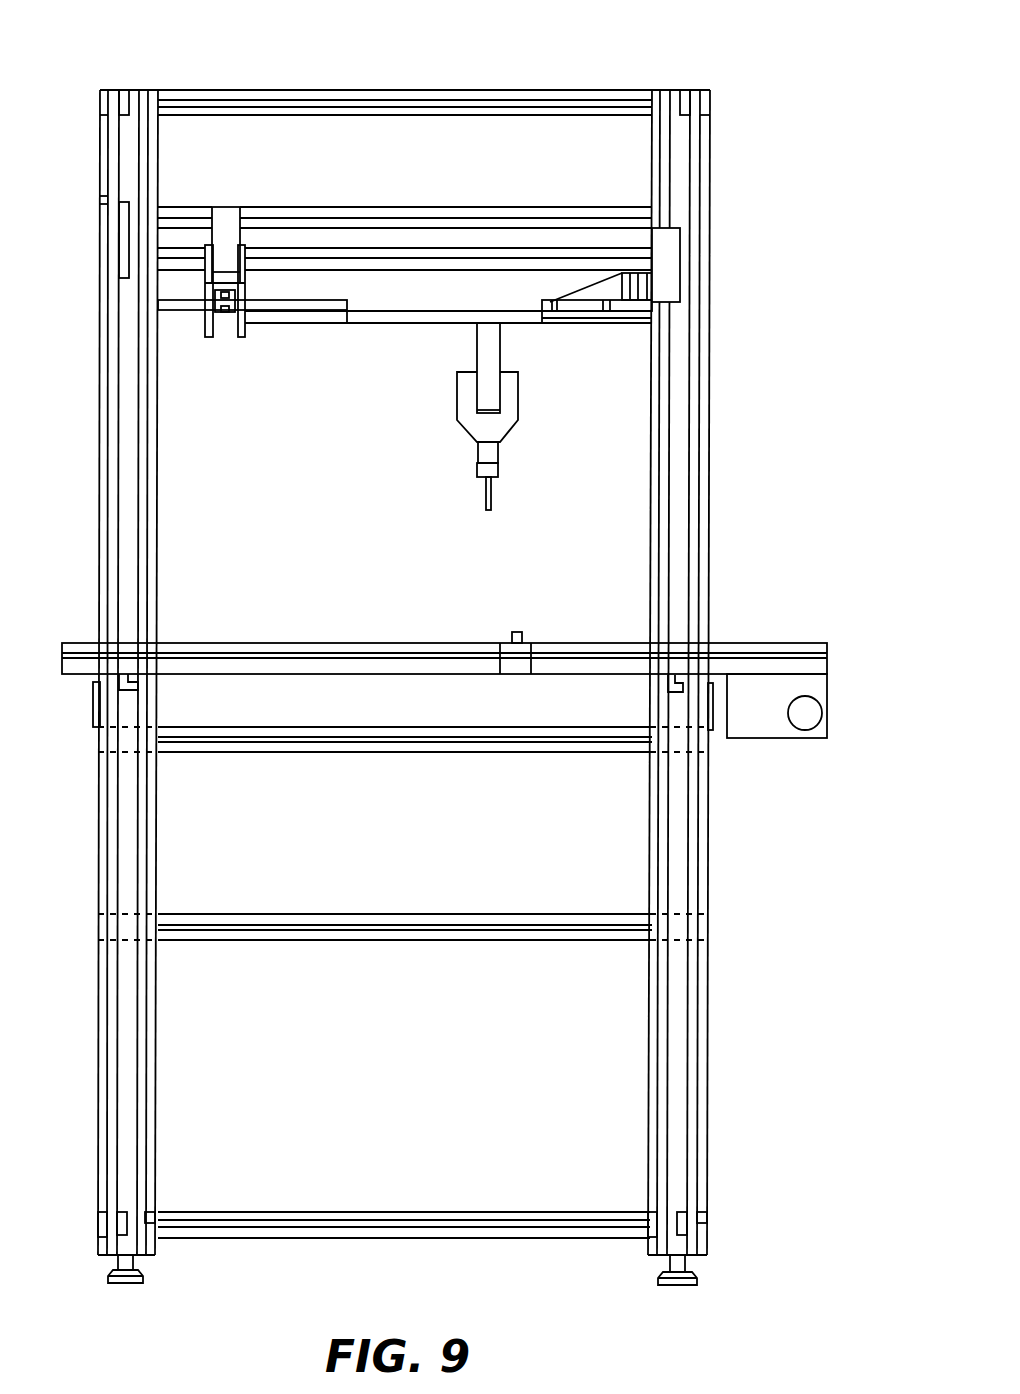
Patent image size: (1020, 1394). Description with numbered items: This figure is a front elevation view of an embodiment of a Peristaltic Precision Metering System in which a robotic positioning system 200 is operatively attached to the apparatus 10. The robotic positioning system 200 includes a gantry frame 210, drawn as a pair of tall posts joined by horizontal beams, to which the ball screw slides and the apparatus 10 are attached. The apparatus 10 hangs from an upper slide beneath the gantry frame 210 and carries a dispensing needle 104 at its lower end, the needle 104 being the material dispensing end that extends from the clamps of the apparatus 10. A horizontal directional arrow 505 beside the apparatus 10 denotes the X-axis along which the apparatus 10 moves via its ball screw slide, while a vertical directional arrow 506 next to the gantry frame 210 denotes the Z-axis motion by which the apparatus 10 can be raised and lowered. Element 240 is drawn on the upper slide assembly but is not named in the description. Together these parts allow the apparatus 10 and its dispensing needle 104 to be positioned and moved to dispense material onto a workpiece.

The robotic positioning system 200 is at (464, 645).
The gantry frame 210 is at (716, 380).
The directional arrow 506 is at (737, 150).
The directional arrow 505 is at (602, 363).
The carriage drive assembly 240 is at (578, 307).
The apparatus 10 is at (442, 423).
The dispensing needle 104 is at (485, 503).